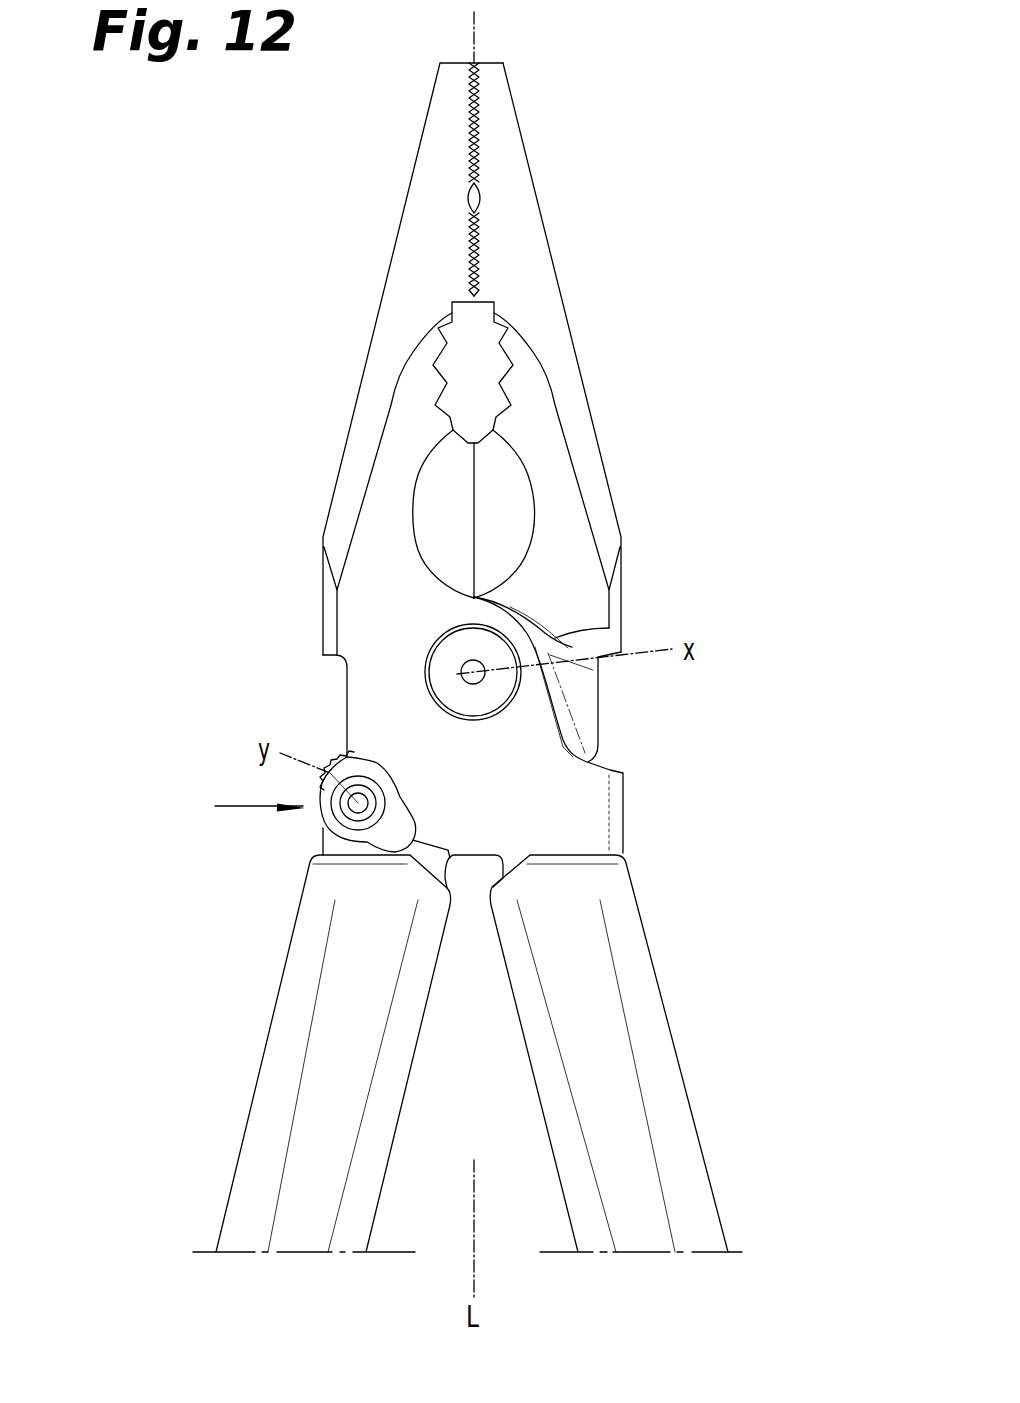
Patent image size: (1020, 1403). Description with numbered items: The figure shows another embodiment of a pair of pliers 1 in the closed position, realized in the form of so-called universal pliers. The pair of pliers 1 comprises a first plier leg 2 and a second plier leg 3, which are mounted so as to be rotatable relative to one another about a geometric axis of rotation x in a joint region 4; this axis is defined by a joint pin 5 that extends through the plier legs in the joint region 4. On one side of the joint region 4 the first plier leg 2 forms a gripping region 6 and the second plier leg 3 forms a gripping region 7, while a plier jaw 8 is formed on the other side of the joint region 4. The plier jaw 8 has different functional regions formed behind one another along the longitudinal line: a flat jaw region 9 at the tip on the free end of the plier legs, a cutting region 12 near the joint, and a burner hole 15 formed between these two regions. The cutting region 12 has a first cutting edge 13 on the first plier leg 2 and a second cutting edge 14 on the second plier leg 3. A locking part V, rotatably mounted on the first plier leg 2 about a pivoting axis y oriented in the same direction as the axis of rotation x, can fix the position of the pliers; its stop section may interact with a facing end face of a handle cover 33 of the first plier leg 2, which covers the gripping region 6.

The pair of pliers 1 is at (620, 136).
The first plier leg 2 is at (680, 1182).
The second plier leg 3 is at (290, 1171).
The joint region 4 is at (408, 632).
The joint pin 5 is at (443, 678).
The gripping region 6 is at (650, 1093).
The gripping region 7 is at (325, 1053).
The plier jaw 8 is at (354, 318).
The flat jaw region 9 is at (454, 181).
The cutting region 12 is at (522, 492).
The first cutting edge 13 is at (502, 478).
The second cutting edge 14 is at (455, 503).
The burner hole 15 is at (477, 365).
The handle cover 33 is at (355, 932).